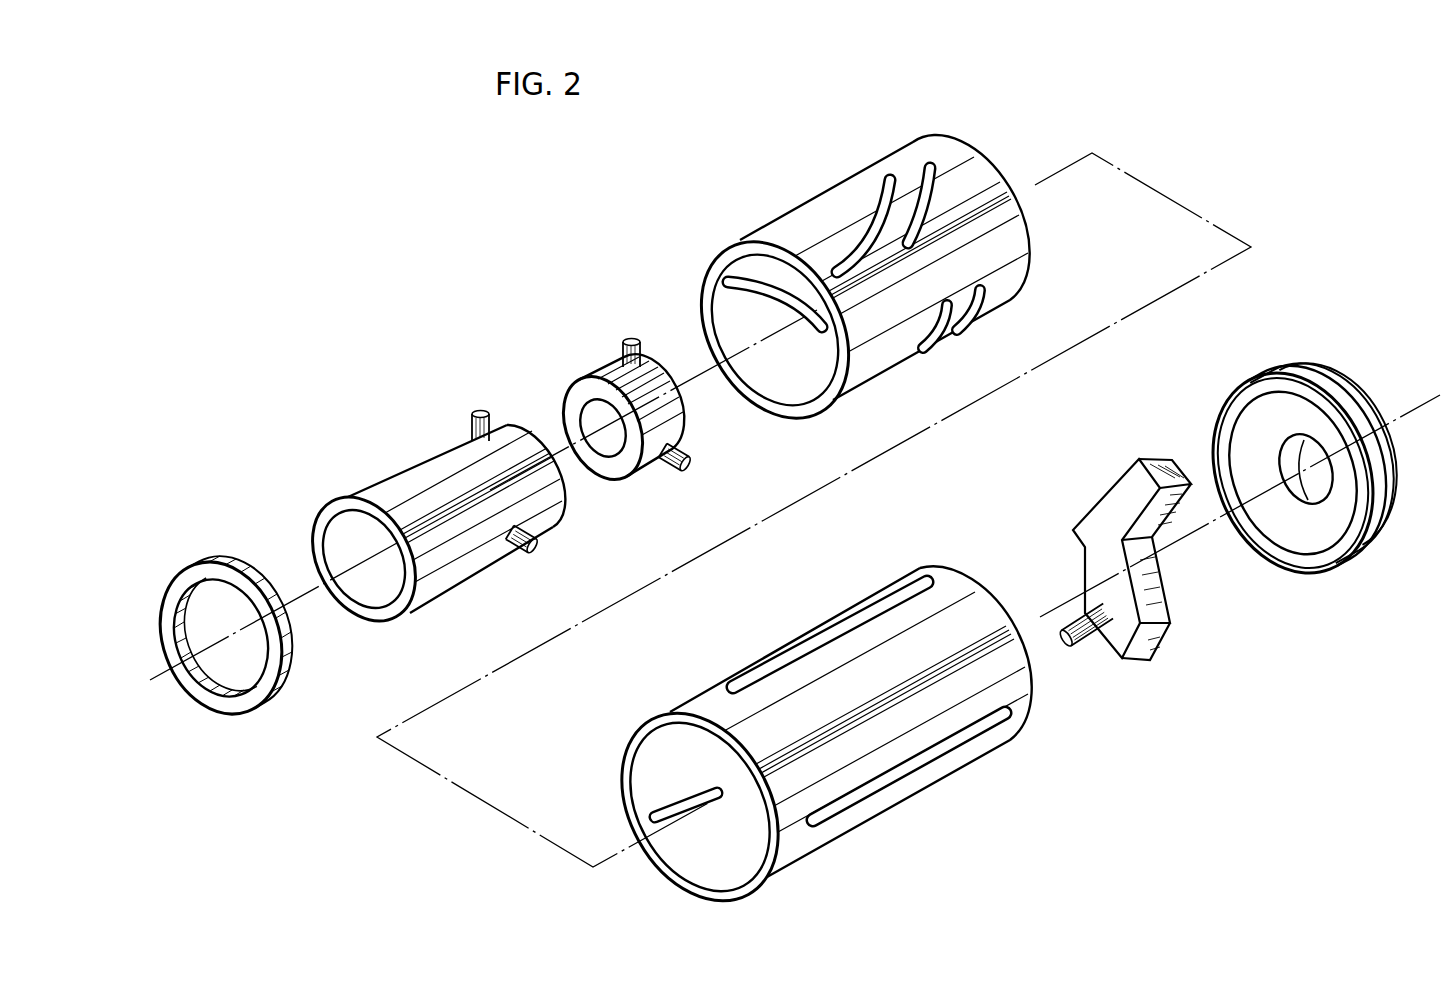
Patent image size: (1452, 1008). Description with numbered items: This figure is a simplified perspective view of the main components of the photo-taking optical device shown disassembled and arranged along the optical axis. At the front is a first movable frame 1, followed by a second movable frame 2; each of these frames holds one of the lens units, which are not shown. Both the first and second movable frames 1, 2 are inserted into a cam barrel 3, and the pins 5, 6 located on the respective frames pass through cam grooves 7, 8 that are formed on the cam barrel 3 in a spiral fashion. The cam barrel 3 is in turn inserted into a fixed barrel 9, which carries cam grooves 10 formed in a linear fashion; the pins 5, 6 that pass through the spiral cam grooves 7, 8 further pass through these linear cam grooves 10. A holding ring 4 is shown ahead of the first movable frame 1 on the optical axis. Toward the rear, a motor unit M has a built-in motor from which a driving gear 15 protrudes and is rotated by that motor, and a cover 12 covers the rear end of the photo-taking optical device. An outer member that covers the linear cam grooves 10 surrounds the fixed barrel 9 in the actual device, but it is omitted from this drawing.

The first movable frame 1 is at (420, 472).
The second movable frame 2 is at (608, 363).
The cam barrel 3 is at (809, 200).
The holding ring 4 is at (225, 562).
The pins 5 is at (481, 410).
The pins 6 is at (633, 340).
The cam grooves 7 is at (862, 185).
The cam grooves 8 is at (935, 172).
The fixed barrel 9 is at (790, 628).
The cam grooves 10 is at (855, 630).
The cover 12 is at (1380, 520).
The driving gear 15 is at (1082, 648).
The motor unit M is at (1160, 562).